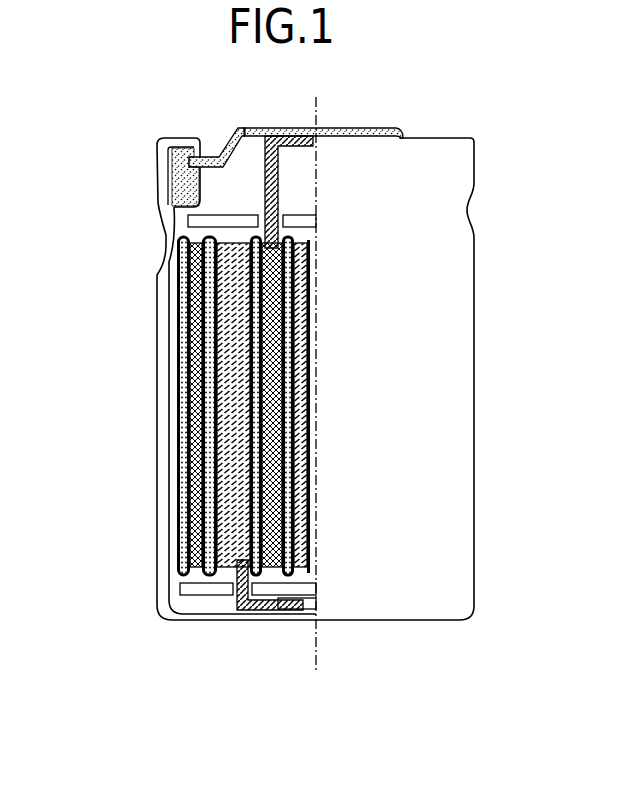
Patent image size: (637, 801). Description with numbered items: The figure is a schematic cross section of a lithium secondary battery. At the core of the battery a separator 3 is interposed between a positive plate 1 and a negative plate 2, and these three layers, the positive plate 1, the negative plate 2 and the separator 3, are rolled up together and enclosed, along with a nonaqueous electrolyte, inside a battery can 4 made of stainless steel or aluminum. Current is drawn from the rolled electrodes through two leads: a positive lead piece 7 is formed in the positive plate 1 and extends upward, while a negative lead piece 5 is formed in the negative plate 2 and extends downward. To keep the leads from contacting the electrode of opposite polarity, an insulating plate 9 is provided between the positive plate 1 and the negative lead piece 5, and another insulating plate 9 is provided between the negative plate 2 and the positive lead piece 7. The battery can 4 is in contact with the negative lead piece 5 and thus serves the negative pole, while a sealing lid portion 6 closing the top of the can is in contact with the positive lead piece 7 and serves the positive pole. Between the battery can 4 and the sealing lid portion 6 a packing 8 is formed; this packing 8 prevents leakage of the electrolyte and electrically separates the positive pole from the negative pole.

The positive plate 1 is at (201, 457).
The negative plate 2 is at (180, 490).
The separator 3 is at (203, 575).
The battery can 4 is at (157, 425).
The negative lead piece 5 is at (228, 612).
The sealing lid portion 6 is at (363, 127).
The positive lead piece 7 is at (265, 177).
The packing 8 is at (203, 146).
The insulating plate 9 is at (187, 226).